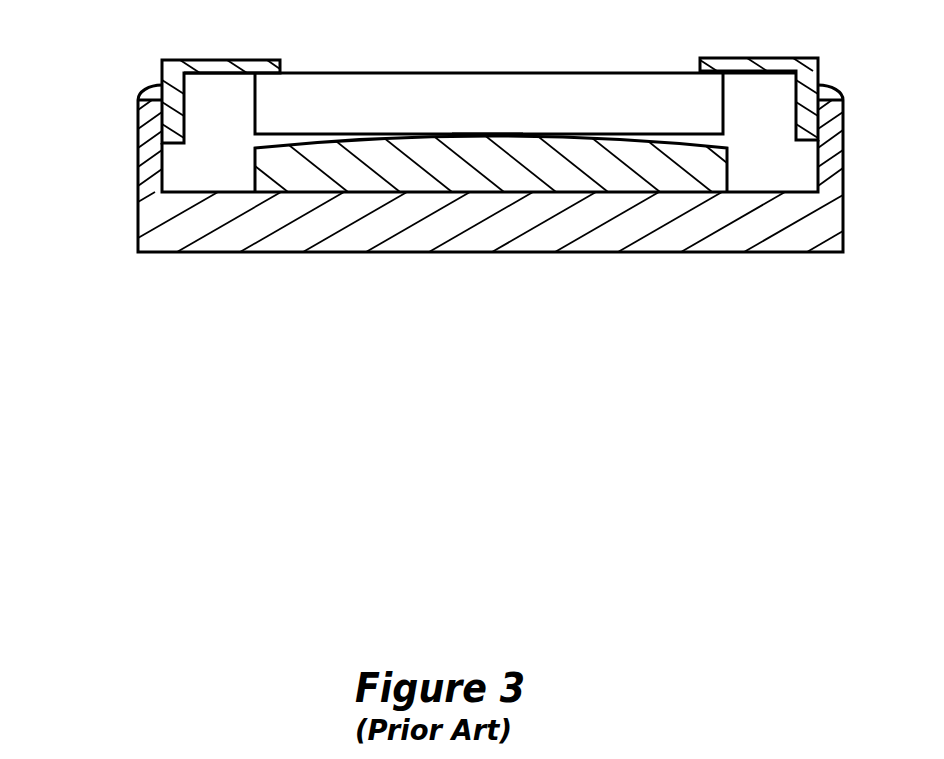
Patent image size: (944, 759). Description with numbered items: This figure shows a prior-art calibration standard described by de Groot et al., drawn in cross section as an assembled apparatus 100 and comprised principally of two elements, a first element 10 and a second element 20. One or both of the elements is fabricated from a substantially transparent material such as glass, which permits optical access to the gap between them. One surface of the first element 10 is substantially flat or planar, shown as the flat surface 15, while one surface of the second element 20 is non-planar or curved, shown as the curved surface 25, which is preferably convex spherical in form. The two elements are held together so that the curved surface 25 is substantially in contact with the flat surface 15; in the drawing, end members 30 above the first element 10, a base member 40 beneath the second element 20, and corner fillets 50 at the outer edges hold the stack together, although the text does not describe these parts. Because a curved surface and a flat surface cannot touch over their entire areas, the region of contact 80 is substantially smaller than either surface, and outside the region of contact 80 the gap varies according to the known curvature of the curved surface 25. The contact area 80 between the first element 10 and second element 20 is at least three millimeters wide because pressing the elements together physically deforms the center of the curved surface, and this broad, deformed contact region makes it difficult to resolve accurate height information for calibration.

The first element 10 is at (575, 73).
The flat surface 15 is at (307, 128).
The second element 20 is at (730, 172).
The curved surface 25 is at (308, 152).
The sealing rings / retaining members 30 is at (238, 60).
The substrate / base housing 40 is at (698, 253).
The sealant fillets 50 is at (155, 86).
The region of contact 80 is at (523, 130).
The prior art package assembly 100 is at (87, 60).